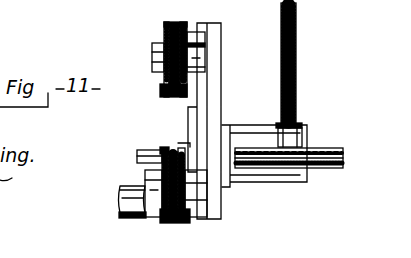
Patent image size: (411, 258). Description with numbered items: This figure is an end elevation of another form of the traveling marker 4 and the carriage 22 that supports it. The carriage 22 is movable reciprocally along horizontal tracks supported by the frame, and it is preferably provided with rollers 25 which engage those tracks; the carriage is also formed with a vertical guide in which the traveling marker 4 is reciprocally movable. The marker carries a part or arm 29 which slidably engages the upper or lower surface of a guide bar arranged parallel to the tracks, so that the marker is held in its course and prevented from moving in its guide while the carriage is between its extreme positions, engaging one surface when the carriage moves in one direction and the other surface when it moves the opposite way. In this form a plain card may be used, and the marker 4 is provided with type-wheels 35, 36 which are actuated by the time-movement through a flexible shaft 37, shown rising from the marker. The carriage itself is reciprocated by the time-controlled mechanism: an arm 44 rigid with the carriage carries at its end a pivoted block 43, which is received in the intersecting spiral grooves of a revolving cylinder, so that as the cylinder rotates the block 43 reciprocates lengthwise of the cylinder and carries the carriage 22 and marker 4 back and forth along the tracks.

The traveling marker 4 is at (222, 166).
The carriage 22 is at (214, 49).
The rollers 25 is at (175, 147).
The arm 29 is at (140, 150).
The pivoted block 43 is at (125, 197).
The arm 44 is at (152, 222).
The flexible shaft 37 is at (294, 94).
The type-wheel 35 is at (342, 144).
The type-wheel 36 is at (347, 169).